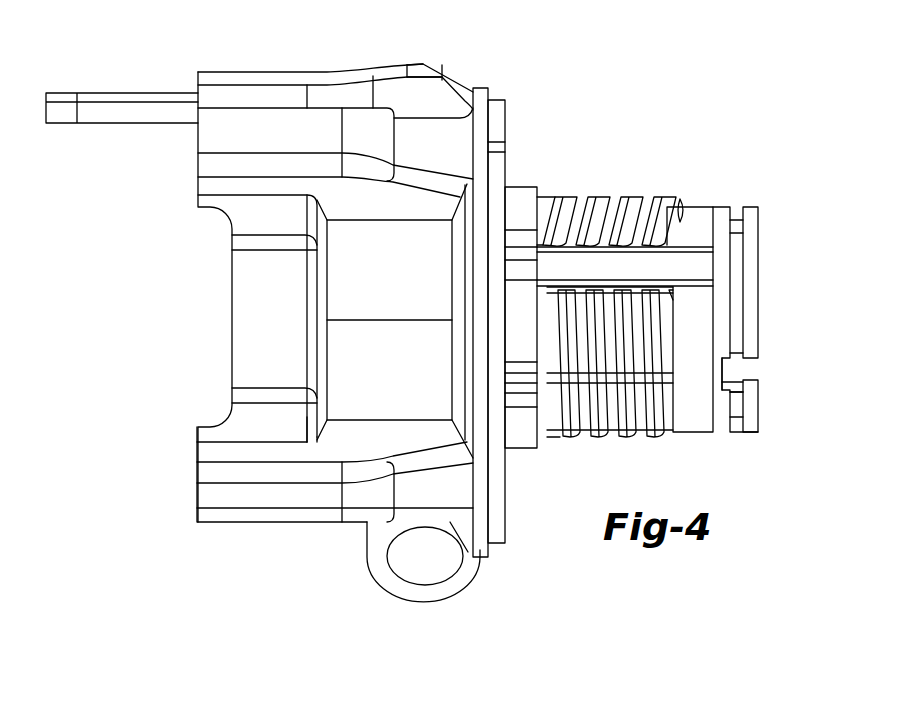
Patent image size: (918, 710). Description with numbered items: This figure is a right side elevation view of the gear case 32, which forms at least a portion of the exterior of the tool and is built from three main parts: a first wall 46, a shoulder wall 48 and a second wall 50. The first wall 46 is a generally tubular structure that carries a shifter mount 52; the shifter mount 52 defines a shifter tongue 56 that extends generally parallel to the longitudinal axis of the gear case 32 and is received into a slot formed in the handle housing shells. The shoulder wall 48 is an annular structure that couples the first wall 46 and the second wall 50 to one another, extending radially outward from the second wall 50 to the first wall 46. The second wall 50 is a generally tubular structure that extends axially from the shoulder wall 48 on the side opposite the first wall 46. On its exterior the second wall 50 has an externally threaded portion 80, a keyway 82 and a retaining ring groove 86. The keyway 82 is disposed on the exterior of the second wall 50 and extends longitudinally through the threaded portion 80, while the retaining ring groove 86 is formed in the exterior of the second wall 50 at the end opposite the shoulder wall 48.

The gear case 32 is at (435, 312).
The first wall 46 is at (259, 503).
The shoulder wall 48 is at (508, 523).
The second wall 50 is at (695, 227).
The shifter mount 52 is at (428, 63).
The shifter tongue 56 is at (91, 107).
The externally threaded portion 80 is at (623, 207).
The keyway 82 is at (697, 268).
The retaining ring groove 86 is at (736, 420).